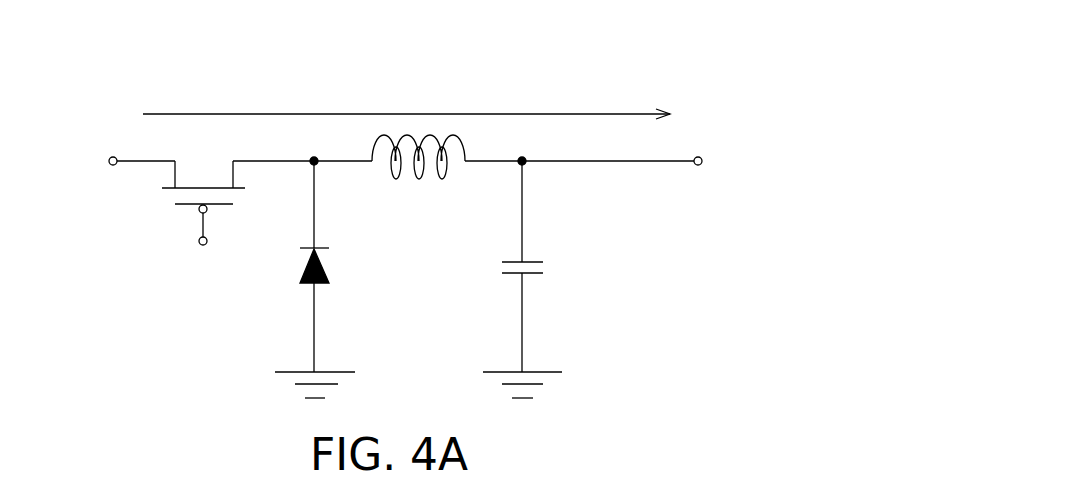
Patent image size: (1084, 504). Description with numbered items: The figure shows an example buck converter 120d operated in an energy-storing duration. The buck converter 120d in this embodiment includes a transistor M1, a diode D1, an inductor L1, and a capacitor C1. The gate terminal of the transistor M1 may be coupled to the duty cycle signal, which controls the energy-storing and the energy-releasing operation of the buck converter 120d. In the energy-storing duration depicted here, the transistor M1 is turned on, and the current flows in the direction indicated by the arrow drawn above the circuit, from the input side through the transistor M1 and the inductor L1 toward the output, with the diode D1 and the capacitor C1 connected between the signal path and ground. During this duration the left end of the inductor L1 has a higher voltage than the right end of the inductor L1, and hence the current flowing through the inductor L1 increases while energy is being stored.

The buck converter 120d is at (793, 33).
The transistor M1 is at (204, 203).
The diode D1 is at (319, 279).
The inductor L1 is at (416, 170).
The capacitor C1 is at (530, 279).